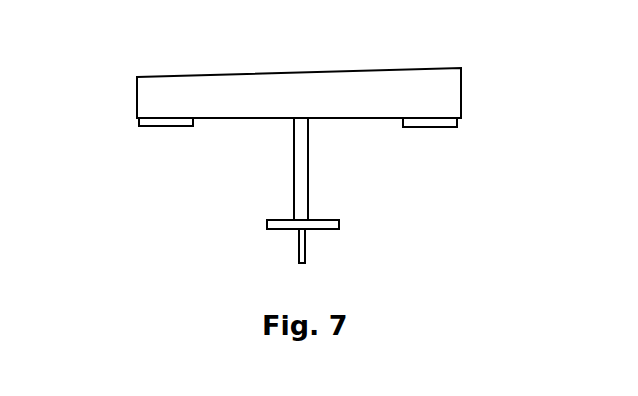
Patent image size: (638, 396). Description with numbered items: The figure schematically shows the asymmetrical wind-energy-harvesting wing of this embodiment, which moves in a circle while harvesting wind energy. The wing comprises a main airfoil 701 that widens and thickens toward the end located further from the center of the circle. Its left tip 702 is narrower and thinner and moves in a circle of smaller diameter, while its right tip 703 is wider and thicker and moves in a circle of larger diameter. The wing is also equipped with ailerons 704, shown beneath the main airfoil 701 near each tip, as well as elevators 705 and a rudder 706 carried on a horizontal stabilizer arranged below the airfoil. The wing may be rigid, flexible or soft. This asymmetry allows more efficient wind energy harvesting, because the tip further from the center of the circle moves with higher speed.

The main airfoil 701 is at (387, 70).
The left tip 702 is at (133, 95).
The right tip 703 is at (463, 90).
The ailerons 704 is at (167, 121).
The elevators 705 is at (340, 225).
The rudder 706 is at (298, 241).